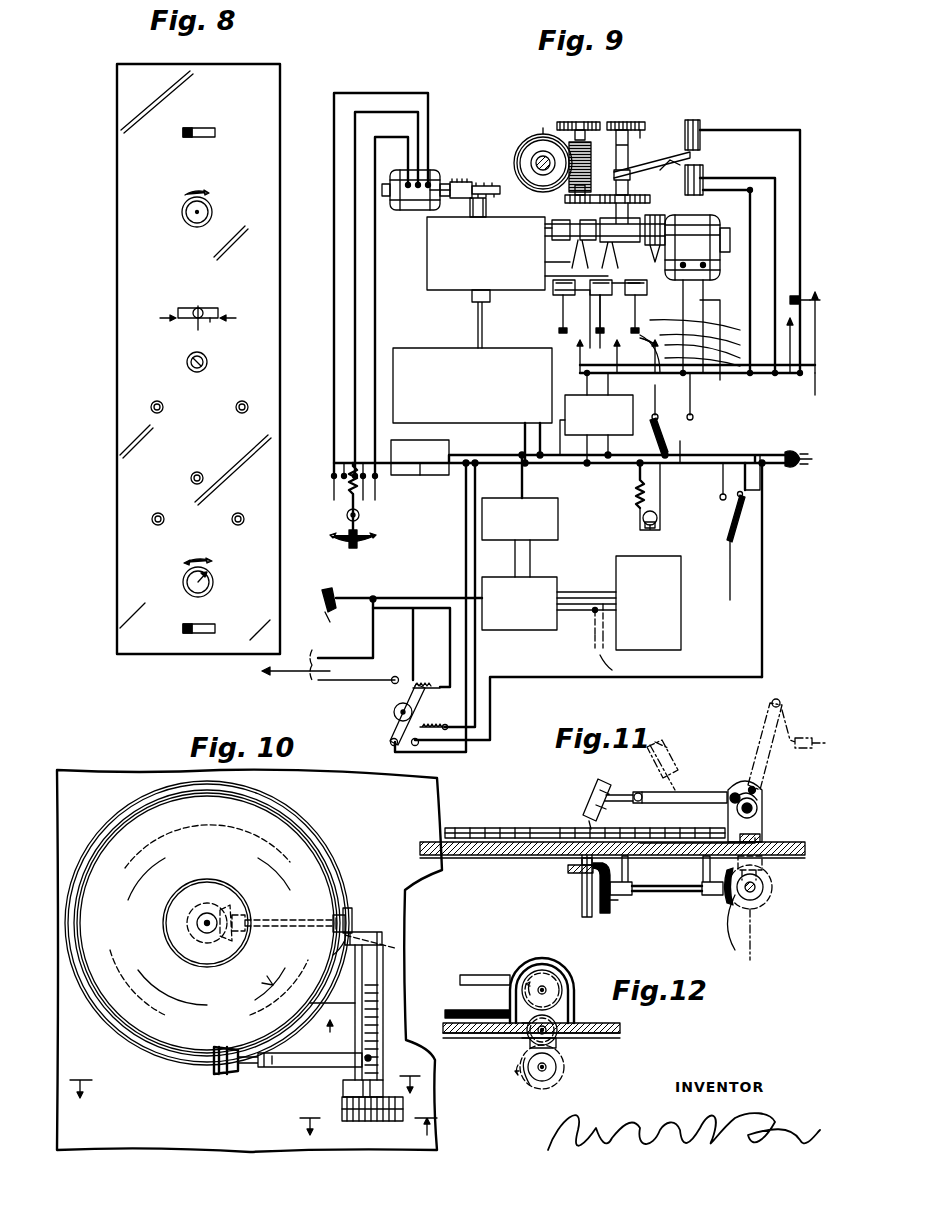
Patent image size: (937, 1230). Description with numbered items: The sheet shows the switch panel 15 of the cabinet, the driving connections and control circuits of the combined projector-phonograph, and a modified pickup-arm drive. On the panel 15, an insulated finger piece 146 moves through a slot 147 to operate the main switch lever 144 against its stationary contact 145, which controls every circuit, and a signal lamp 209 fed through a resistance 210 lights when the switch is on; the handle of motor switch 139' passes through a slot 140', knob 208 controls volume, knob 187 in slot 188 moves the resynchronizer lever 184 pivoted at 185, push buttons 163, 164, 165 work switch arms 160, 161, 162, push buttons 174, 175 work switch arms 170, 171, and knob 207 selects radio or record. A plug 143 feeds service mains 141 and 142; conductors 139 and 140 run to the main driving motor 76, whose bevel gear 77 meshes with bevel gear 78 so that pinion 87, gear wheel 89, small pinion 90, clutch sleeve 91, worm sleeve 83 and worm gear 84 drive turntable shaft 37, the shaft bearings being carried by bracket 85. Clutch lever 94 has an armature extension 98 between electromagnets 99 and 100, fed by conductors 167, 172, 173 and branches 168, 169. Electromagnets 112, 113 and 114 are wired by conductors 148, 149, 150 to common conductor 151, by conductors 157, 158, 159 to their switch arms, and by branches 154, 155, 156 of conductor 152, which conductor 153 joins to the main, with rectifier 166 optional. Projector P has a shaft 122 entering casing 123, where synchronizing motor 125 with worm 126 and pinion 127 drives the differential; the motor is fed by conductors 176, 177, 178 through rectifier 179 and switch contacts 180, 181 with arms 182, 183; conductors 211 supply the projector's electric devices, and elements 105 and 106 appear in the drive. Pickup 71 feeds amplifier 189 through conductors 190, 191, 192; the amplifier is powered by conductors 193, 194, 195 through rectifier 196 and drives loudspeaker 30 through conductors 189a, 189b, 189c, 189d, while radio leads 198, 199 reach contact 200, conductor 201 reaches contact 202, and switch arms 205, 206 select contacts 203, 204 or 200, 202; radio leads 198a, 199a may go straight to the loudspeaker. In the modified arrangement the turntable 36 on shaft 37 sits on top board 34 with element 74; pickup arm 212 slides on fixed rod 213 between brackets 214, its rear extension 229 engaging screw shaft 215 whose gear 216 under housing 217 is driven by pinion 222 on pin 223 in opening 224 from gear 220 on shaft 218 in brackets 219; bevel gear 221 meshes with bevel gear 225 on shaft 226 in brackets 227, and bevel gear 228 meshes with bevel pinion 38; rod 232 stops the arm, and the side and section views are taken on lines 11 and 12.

In FIG. 8, the switch panel 15 is at (117, 192).
In FIG. 8, the insulated finger piece 146 is at (186, 138).
In FIG. 9, the insulated finger piece 146 is at (730, 540).
In FIG. 8, the slot 147 is at (208, 137).
In FIG. 8, the volume knob 208 is at (209, 213).
In FIG. 8, the finger piece 187 is at (190, 318).
In FIG. 9, the finger piece 187 is at (352, 548).
In FIG. 8, the slot 188 is at (210, 318).
In FIG. 8, the signal lamp 209 is at (187, 362).
In FIG. 9, the signal lamp 209 is at (642, 512).
In FIG. 8, the push button 174 is at (151, 407).
In FIG. 9, the push button 174 is at (762, 305).
In FIG. 8, the push button 175 is at (236, 407).
In FIG. 9, the push button 175 is at (815, 290).
In FIG. 8, the push button 164 is at (191, 478).
In FIG. 9, the push button 164 is at (605, 322).
In FIG. 8, the push button 163 is at (152, 519).
In FIG. 9, the push button 163 is at (644, 346).
In FIG. 8, the push button 165 is at (232, 516).
In FIG. 9, the push button 165 is at (568, 319).
In FIG. 8, the rotary knob 207 is at (185, 580).
In FIG. 9, the rotary knob 207 is at (394, 712).
In FIG. 8, the motor switch 139' is at (171, 649).
In FIG. 9, the motor switch 139' is at (700, 438).
In FIG. 8, the slot 140' is at (185, 655).
In FIG. 9, the conductor 176 is at (334, 237).
In FIG. 9, the conductor 177 is at (355, 261).
In FIG. 9, the conductor 178 is at (375, 286).
In FIG. 9, the synchronizing motor 125 is at (412, 210).
In FIG. 9, the pinion 127 is at (462, 182).
In FIG. 9, the driving worm 126 is at (490, 186).
In FIG. 9, the casing 123 is at (428, 270).
In FIG. 9, the projector shaft 122 is at (478, 315).
In FIG. 9, the motion picture projector P is at (405, 356).
In FIG. 9, the turntable shaft 37 is at (543, 163).
In FIG. 10, the turntable shaft 37 is at (207, 923).
In FIG. 11, the turntable shaft 37 is at (582, 892).
In FIG. 9, the worm gear 84 is at (522, 163).
In FIG. 9, the worm sleeve 83 is at (541, 136).
In FIG. 9, the gear wheel 89 is at (578, 122).
In FIG. 9, the bracket 85 is at (590, 202).
In FIG. 9, the clutch sleeve 91 is at (614, 122).
In FIG. 9, the small pinion 90 is at (640, 130).
In FIG. 9, the clutch-operating lever 94 is at (655, 168).
In FIG. 9, the electromagnet 100 is at (685, 178).
In FIG. 9, the armature extension 98 is at (670, 160).
In FIG. 9, the electromagnet 99 is at (695, 120).
In FIG. 9, the conductor 173 is at (795, 130).
In FIG. 9, the conductor 172 is at (775, 178).
In FIG. 9, the conductor 167 is at (750, 207).
In FIG. 9, the small pinion 87 is at (565, 200).
In FIG. 9, the bevel gear 78 is at (592, 229).
In FIG. 9, the bevel gear 77 is at (660, 222).
In FIG. 9, the main driving motor 76 is at (716, 232).
In FIG. 9, the shaft 106 is at (552, 230).
In FIG. 9, the shaft 105 is at (548, 265).
In FIG. 9, the electromagnet 113 is at (552, 280).
In FIG. 9, the electromagnet 112 is at (647, 298).
In FIG. 9, the electromagnet 114 is at (556, 297).
In FIG. 9, the conductor 159 is at (560, 307).
In FIG. 9, the conductor 150 is at (565, 320).
In FIG. 9, the switch arm 162 is at (580, 335).
In FIG. 9, the branch conductor 156 is at (610, 345).
In FIG. 9, the conductor 149 is at (622, 350).
In FIG. 9, the switch arm 161 is at (640, 360).
In FIG. 9, the branch conductor 155 is at (652, 370).
In FIG. 9, the conductor 158 is at (760, 303).
In FIG. 9, the conductor 148 is at (760, 318).
In FIG. 9, the conductor 157 is at (760, 333).
In FIG. 9, the switch arm 160 is at (760, 348).
In FIG. 9, the switch arm 171 is at (792, 304).
In FIG. 9, the switch arm 170 is at (790, 330).
In FIG. 9, the branch conductor 168 is at (790, 345).
In FIG. 9, the branch conductor 154 is at (690, 376).
In FIG. 9, the conductor 152 is at (728, 378).
In FIG. 9, the branch conductor 169 is at (815, 380).
In FIG. 9, the common conductor 151 is at (608, 386).
In FIG. 9, the rectifier 166 is at (633, 410).
In FIG. 9, the conductor 153 is at (620, 440).
In FIG. 9, the conductor 140 is at (657, 447).
In FIG. 9, the conductor 139 is at (696, 399).
In FIG. 9, the service main 141 is at (428, 445).
In FIG. 9, the plug 143 is at (800, 444).
In FIG. 9, the service main 142 is at (770, 468).
In FIG. 9, the conductors 211 is at (532, 436).
In FIG. 9, the conductor 195 is at (522, 475).
In FIG. 9, the rectifier 196 is at (558, 523).
In FIG. 9, the amplifier 189 is at (500, 630).
In FIG. 9, the conductor 189a is at (620, 580).
In FIG. 9, the conductor 189b is at (605, 590).
In FIG. 9, the conductor 189c is at (595, 635).
In FIG. 9, the conductor 189d is at (565, 630).
In FIG. 9, the loudspeaker 30 is at (682, 618).
In FIG. 9, the radio lead 198a is at (608, 622).
In FIG. 9, the radio lead 199a is at (608, 628).
In FIG. 9, the conductor 201 is at (762, 634).
In FIG. 9, the switch lever 144 is at (722, 518).
In FIG. 9, the stationary contact 145 is at (720, 496).
In FIG. 9, the resistance 210 is at (636, 490).
In FIG. 9, the switch contact 180 is at (332, 476).
In FIG. 9, the switch arm 182 is at (344, 478).
In FIG. 9, the switch lever 184 is at (348, 485).
In FIG. 9, the pivot 185 is at (350, 515).
In FIG. 9, the switch contact 181 is at (364, 480).
In FIG. 9, the switch arm 183 is at (368, 500).
In FIG. 9, the rectifier 179 is at (412, 476).
In FIG. 9, the conductor 193 is at (466, 548).
In FIG. 9, the conductor 194 is at (475, 569).
In FIG. 9, the electric phonograph pickup 71 is at (322, 603).
In FIG. 10, the electric phonograph pickup 71 is at (222, 1074).
In FIG. 11, the electric phonograph pickup 71 is at (585, 788).
In FIG. 9, the conductor 190 is at (388, 596).
In FIG. 9, the conductor 191 is at (413, 622).
In FIG. 9, the conductor 192 is at (450, 642).
In FIG. 9, the radio lead 198 is at (360, 658).
In FIG. 9, the radio lead 199 is at (350, 682).
In FIG. 9, the switch contact 200 is at (395, 676).
In FIG. 9, the switch contact 203 is at (418, 686).
In FIG. 9, the switch arm 205 is at (400, 685).
In FIG. 9, the switch arm 206 is at (392, 728).
In FIG. 9, the switch contact 204 is at (391, 744).
In FIG. 9, the switch contact 202 is at (415, 746).
In FIG. 10, the top board 34 is at (372, 792).
In FIG. 11, the top board 34 is at (798, 843).
In FIG. 12, the top board 34 is at (622, 1023).
In FIG. 10, the phonograph turntable 36 is at (290, 817).
In FIG. 11, the phonograph turntable 36 is at (447, 832).
In FIG. 12, the phonograph turntable 36 is at (465, 1010).
In FIG. 10, the record hub 74 is at (300, 840).
In FIG. 11, the record hub 74 is at (500, 828).
In FIG. 10, the bevel pinion 38 is at (206, 903).
In FIG. 11, the bevel pinion 38 is at (568, 869).
In FIG. 10, the shaft 226 is at (254, 915).
In FIG. 11, the shaft 226 is at (640, 893).
In FIG. 10, the bevel gear 225 is at (345, 908).
In FIG. 11, the bevel gear 225 is at (735, 935).
In FIG. 10, the brackets 214 is at (372, 932).
In FIG. 11, the brackets 214 is at (760, 808).
In FIG. 10, the bevel gear 221 is at (390, 945).
In FIG. 11, the bevel gear 221 is at (750, 912).
In FIG. 10, the stop rod 232 is at (355, 945).
In FIG. 11, the stop rod 232 is at (756, 787).
In FIG. 10, the bevel gear 228 is at (212, 940).
In FIG. 11, the bevel gear 228 is at (608, 913).
In FIG. 10, the screw shaft 215 is at (383, 1000).
In FIG. 11, the screw shaft 215 is at (735, 824).
In FIG. 12, the screw shaft 215 is at (458, 990).
In FIG. 10, the fixed rod 213 is at (355, 1003).
In FIG. 11, the fixed rod 213 is at (733, 792).
In FIG. 10, the rear extension 229 is at (372, 1058).
In FIG. 10, the pickup arm 212 is at (282, 1069).
In FIG. 11, the pickup arm 212 is at (683, 792).
In FIG. 12, the pickup arm 212 is at (487, 978).
In FIG. 10, the gear 216 is at (360, 1121).
In FIG. 12, the gear 216 is at (555, 993).
In FIG. 10, the housing 217 is at (392, 1121).
In FIG. 11, the housing 217 is at (555, 950).
In FIG. 10, the section line 11- 11 is at (248, 1093).
In FIG. 10, the section line 12- 12 is at (368, 1132).
In FIG. 11, the brackets 227 is at (630, 870).
In FIG. 11, the brackets 219 is at (762, 865).
In FIG. 12, the brackets 219 is at (565, 1066).
In FIG. 11, the gear 220 is at (773, 888).
In FIG. 12, the gear 220 is at (560, 1080).
In FIG. 11, the shaft 218 is at (755, 896).
In FIG. 12, the shaft 218 is at (533, 1073).
In FIG. 12, the pin 223 is at (556, 1022).
In FIG. 12, the opening 224 is at (558, 1042).
In FIG. 12, the pinion 222 is at (524, 1040).